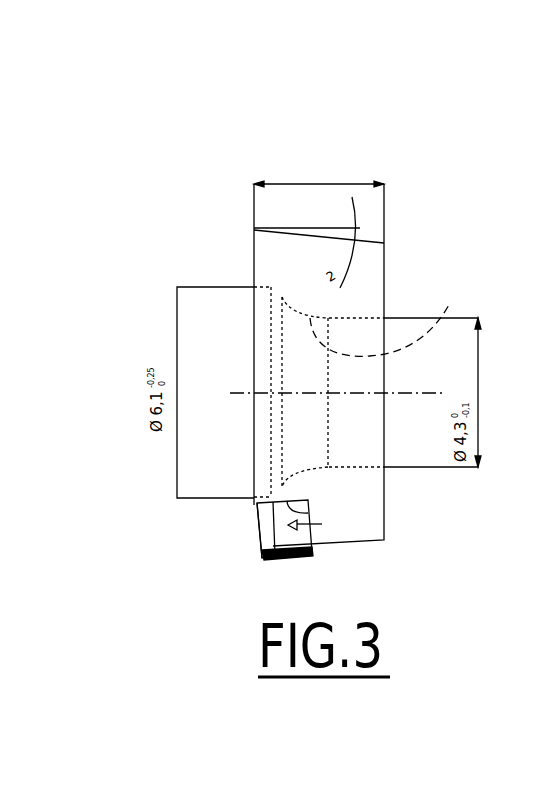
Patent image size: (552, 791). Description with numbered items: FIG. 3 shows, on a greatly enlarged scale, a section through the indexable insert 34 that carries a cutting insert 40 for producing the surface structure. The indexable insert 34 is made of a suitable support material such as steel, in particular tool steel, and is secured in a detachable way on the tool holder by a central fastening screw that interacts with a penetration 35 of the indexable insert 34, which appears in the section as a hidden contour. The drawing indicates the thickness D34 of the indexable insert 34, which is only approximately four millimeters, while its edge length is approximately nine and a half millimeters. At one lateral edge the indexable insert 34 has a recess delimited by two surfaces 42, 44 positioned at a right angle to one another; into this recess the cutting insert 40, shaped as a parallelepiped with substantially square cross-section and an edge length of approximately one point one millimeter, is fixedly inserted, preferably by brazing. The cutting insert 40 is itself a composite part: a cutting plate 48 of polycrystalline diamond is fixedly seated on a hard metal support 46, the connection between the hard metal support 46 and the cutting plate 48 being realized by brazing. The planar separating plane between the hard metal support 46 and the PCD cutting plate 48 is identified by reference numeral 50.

The cutting insert 40 is at (253, 547).
The indexable insert 34 is at (358, 288).
The thickness of the indexable insert D34 is at (353, 183).
The penetration 35 is at (413, 313).
The surface 42 is at (308, 514).
The surface 44 is at (253, 547).
The hard metal support 46 is at (332, 548).
The cutting plate 48 is at (267, 521).
The separating plane 50 is at (257, 512).